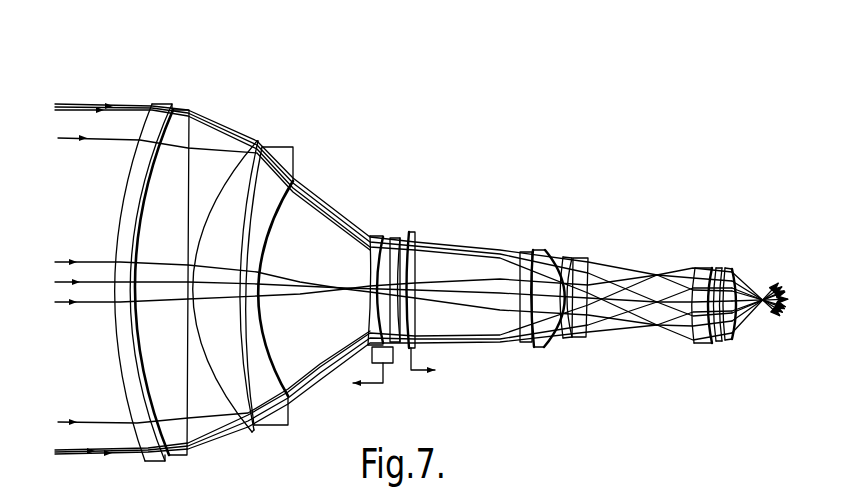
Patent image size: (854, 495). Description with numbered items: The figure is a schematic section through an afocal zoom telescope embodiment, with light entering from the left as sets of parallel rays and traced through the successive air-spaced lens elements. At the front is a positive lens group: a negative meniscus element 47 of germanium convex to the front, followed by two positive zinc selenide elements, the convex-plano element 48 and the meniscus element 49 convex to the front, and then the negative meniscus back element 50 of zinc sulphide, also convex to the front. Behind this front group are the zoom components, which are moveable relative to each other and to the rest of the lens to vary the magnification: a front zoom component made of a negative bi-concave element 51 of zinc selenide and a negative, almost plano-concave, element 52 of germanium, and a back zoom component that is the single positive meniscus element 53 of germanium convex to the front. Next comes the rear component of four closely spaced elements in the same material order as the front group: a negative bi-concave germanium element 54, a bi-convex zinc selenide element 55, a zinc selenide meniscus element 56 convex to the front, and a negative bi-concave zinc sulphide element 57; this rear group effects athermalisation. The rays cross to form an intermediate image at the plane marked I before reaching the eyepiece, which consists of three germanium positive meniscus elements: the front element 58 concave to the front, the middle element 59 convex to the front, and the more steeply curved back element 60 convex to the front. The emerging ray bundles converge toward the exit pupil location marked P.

The negative meniscus element 47 is at (163, 103).
The convex-plano positive element 48 is at (183, 108).
The meniscus positive element 49 is at (257, 140).
The negative meniscus back element 50 is at (280, 145).
The front negative bi-concave element 51 is at (378, 233).
The back negative bi-concave element 52 is at (393, 237).
The positive meniscus element 53 is at (413, 232).
The front negative bi-concave element 54 is at (525, 250).
The bi-convex positive element 55 is at (540, 248).
The meniscus positive element 56 is at (563, 257).
The negative bi-concave back element 57 is at (582, 257).
The front eyepiece element 58 is at (697, 267).
The middle eyepiece element 59 is at (718, 267).
The back eyepiece element 60 is at (730, 270).
The intermediate image plane I is at (661, 342).
The exit pupil P is at (757, 344).